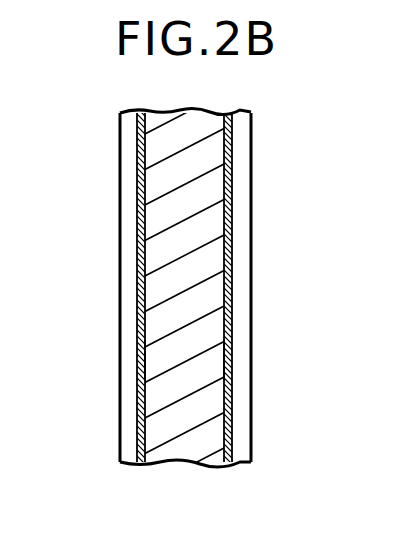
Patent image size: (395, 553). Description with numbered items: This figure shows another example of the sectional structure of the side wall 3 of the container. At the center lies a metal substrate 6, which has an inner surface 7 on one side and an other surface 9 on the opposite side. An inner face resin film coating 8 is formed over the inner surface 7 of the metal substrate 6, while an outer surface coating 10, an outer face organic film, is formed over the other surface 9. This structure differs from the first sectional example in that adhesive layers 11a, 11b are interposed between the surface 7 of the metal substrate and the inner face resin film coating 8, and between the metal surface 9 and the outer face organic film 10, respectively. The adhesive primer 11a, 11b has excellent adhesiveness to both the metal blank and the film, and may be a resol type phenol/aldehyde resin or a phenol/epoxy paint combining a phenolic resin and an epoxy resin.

The side wall 3 is at (258, 139).
The metal substrate 6 is at (186, 428).
The inner surface 7 is at (235, 357).
The inner face resin film coating 8 is at (242, 280).
The other surface 9 is at (145, 360).
The outer surface coating 10 is at (127, 295).
The adhesive layer 11a is at (237, 226).
The adhesive layer 11b is at (146, 225).